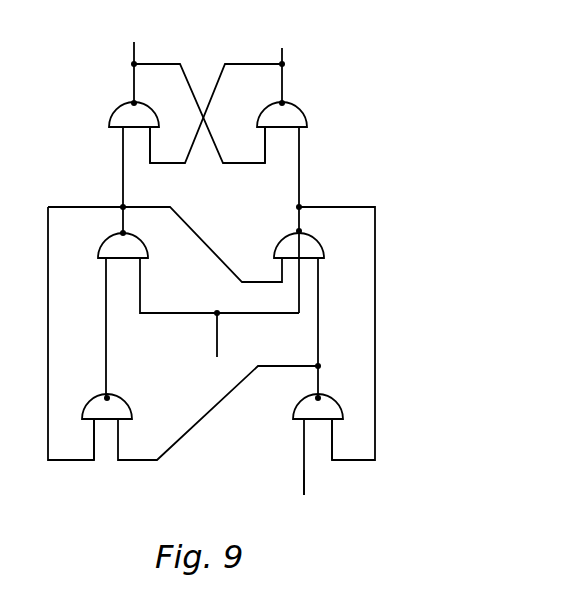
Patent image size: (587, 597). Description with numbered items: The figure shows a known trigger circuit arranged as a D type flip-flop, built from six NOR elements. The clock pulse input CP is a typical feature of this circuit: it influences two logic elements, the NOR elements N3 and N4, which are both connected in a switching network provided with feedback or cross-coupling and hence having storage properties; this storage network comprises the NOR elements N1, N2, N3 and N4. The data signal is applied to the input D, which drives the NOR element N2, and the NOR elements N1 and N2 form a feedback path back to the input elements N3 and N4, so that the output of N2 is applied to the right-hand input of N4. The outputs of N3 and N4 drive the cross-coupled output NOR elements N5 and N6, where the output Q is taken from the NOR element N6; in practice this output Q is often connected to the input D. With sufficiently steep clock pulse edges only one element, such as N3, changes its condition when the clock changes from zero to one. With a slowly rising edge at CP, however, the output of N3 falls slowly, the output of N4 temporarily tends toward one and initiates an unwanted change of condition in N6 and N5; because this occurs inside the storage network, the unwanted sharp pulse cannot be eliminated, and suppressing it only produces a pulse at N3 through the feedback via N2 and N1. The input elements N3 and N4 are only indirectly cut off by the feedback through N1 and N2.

The output Q is at (195, 88).
The NOR element N1 is at (190, 413).
The NOR element N2 is at (328, 429).
The NOR element N3 is at (173, 332).
The NOR element N4 is at (324, 332).
The NOR element N5 is at (123, 146).
The NOR element N6 is at (296, 146).
The clock pulse input CP is at (203, 336).
The input D is at (306, 495).